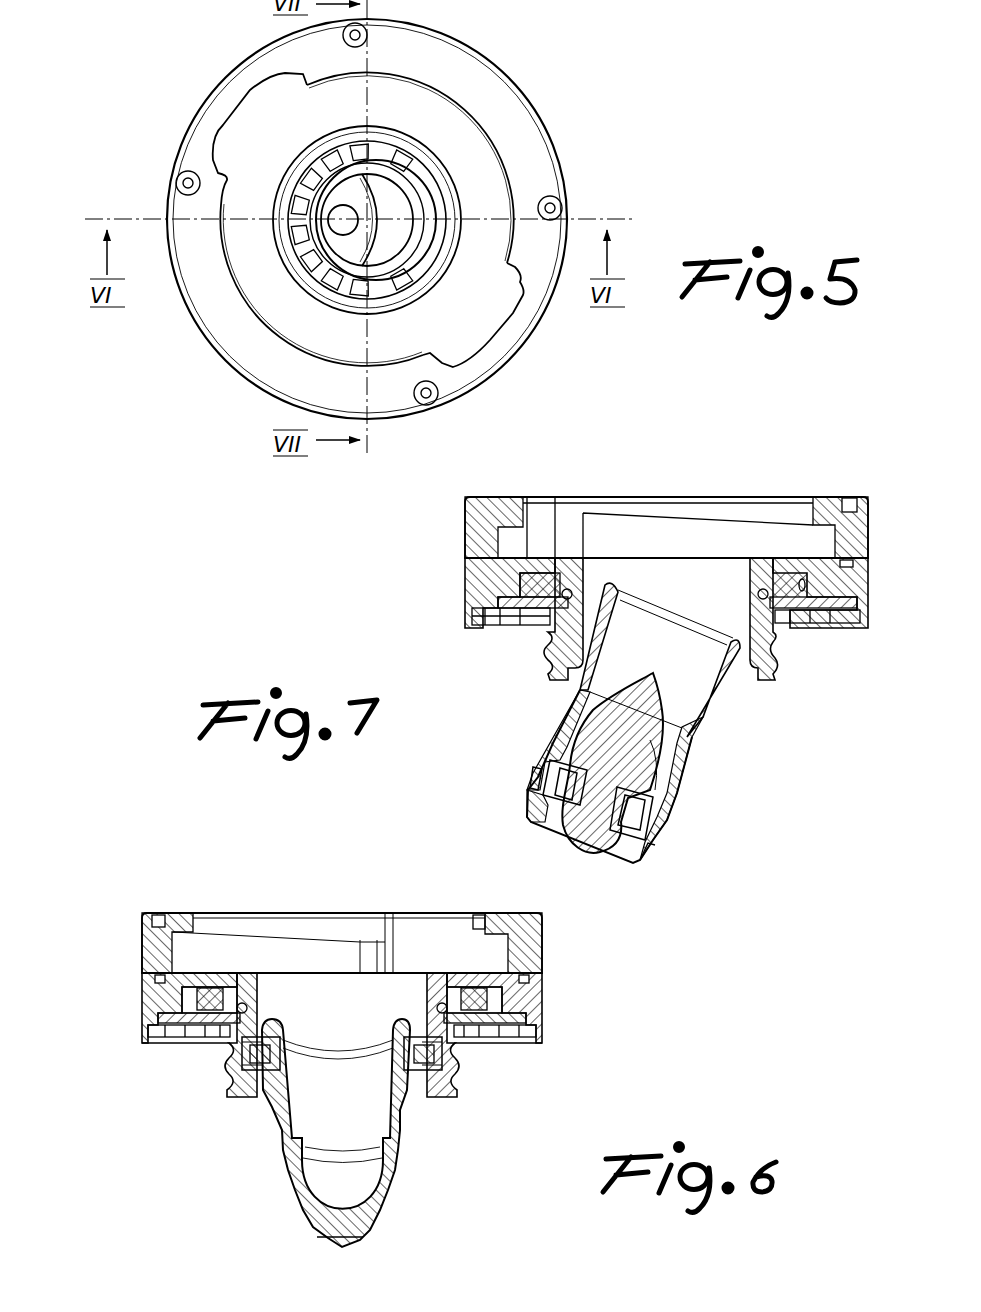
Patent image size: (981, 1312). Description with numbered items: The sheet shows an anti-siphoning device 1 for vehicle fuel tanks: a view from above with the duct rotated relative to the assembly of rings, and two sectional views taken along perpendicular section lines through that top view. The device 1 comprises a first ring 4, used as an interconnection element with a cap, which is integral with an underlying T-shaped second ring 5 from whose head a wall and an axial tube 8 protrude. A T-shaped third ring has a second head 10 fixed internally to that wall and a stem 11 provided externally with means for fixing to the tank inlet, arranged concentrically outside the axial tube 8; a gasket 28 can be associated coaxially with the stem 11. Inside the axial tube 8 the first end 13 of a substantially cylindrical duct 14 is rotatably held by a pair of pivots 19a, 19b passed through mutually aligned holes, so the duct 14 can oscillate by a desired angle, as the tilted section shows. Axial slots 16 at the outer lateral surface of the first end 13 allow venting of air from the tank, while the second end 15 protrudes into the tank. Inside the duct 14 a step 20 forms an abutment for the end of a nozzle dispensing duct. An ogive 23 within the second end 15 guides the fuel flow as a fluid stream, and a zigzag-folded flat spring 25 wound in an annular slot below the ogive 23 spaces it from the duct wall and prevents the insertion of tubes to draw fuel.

In FIG. 5, the anti-siphoning device 1 is at (157, 104).
In FIG. 7, the anti-siphoning device 1 is at (403, 634).
In FIG. 6, the anti-siphoning device 1 is at (128, 886).
In FIG. 5, the first ring 4 is at (531, 91).
In FIG. 7, the first ring 4 is at (839, 493).
In FIG. 6, the first ring 4 is at (173, 910).
In FIG. 7, the second ring 5 is at (461, 576).
In FIG. 5, the axial tube 8 is at (410, 247).
In FIG. 7, the axial tube 8 is at (573, 632).
In FIG. 6, the axial tube 8 is at (256, 1005).
In FIG. 7, the second head 10 is at (540, 603).
In FIG. 6, the second head 10 is at (175, 1018).
In FIG. 7, the stem 11 is at (547, 668).
In FIG. 6, the stem 11 is at (230, 1080).
In FIG. 7, the first end 13 is at (607, 578).
In FIG. 5, the duct 14 is at (393, 189).
In FIG. 7, the duct 14 is at (733, 760).
In FIG. 6, the duct 14 is at (261, 1129).
In FIG. 7, the second end 15 is at (666, 853).
In FIG. 7, the axial slots 16 is at (738, 668).
In FIG. 6, the pivot 19a is at (253, 1053).
In FIG. 6, the pivot 19b is at (452, 1052).
In FIG. 7, the step 20 is at (689, 724).
In FIG. 6, the step 20 is at (300, 1132).
In FIG. 5, the ogive 23 is at (337, 242).
In FIG. 7, the ogive 23 is at (655, 669).
In FIG. 6, the ogive 23 is at (416, 1148).
In FIG. 7, the flat spring 25 is at (642, 807).
In FIG. 7, the gasket 28 is at (527, 793).